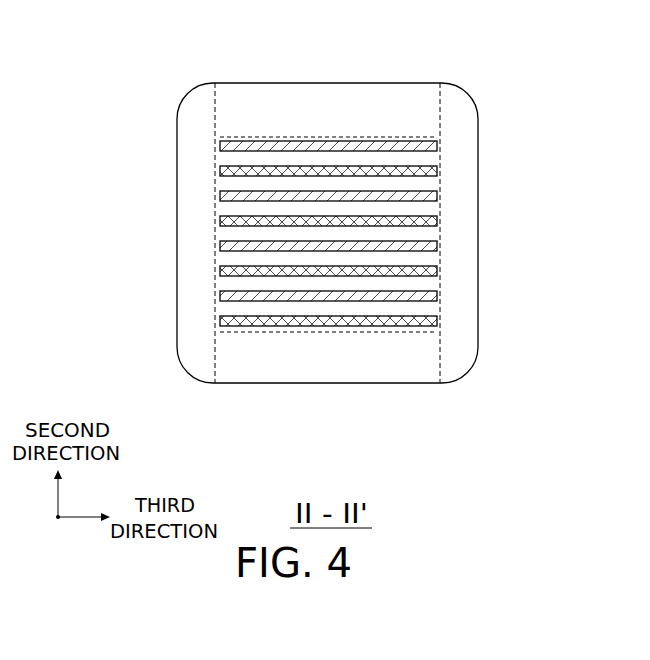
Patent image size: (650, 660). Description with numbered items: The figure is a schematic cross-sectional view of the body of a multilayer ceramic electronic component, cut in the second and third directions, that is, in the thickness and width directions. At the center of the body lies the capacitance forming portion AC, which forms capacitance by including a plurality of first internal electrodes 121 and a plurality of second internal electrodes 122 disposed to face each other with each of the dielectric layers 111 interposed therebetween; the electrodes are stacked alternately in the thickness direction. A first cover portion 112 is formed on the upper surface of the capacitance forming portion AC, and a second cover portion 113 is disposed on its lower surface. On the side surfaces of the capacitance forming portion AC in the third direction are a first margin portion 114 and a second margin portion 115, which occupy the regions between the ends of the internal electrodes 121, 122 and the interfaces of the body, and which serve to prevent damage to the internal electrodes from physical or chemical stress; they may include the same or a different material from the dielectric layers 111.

The dielectric layer 111 is at (262, 157).
The first cover portion 112 is at (310, 97).
The second cover portion 113 is at (350, 383).
The first margin portion 114 is at (190, 322).
The second margin portion 115 is at (463, 233).
The first internal electrode 121 is at (363, 148).
The second internal electrode 122 is at (392, 217).
The capacitance forming portion AC is at (445, 295).